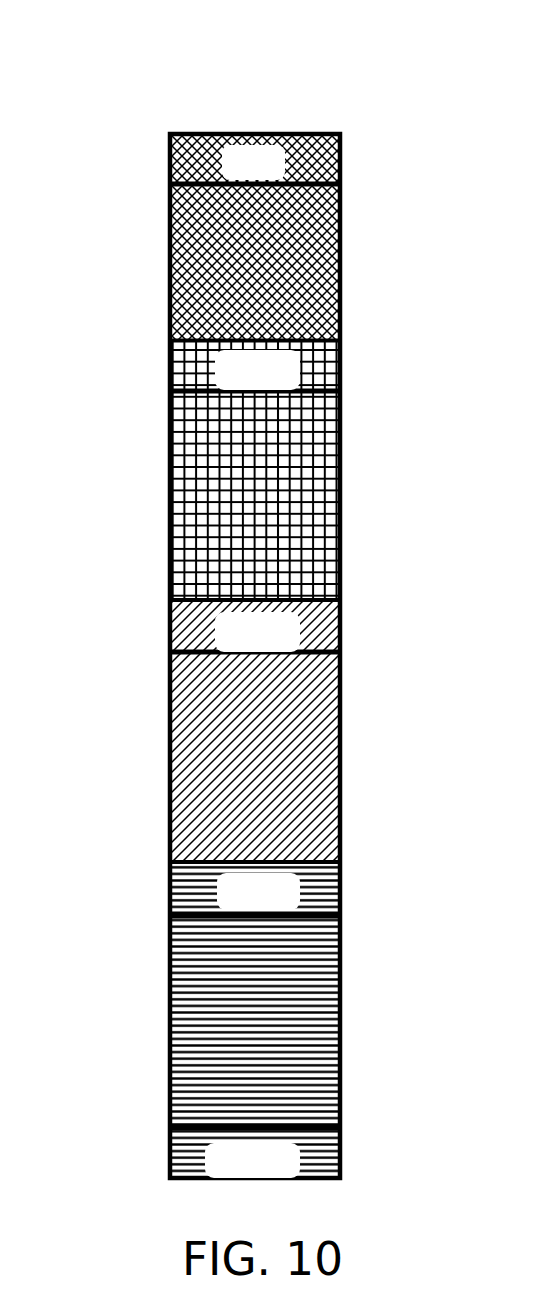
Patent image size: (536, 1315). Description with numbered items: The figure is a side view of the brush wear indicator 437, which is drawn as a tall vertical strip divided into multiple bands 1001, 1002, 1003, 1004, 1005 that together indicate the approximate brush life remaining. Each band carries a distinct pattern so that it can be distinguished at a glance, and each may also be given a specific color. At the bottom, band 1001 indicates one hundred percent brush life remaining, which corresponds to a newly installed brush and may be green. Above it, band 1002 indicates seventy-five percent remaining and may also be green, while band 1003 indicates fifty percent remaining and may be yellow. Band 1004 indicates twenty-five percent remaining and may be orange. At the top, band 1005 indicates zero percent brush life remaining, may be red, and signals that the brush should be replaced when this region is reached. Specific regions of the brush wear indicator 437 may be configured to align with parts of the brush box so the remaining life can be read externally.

The brush wear indicator 437 is at (333, 74).
The band 1001 is at (170, 1149).
The band 1002 is at (171, 890).
The band 1003 is at (171, 627).
The band 1004 is at (171, 362).
The band 1005 is at (171, 156).